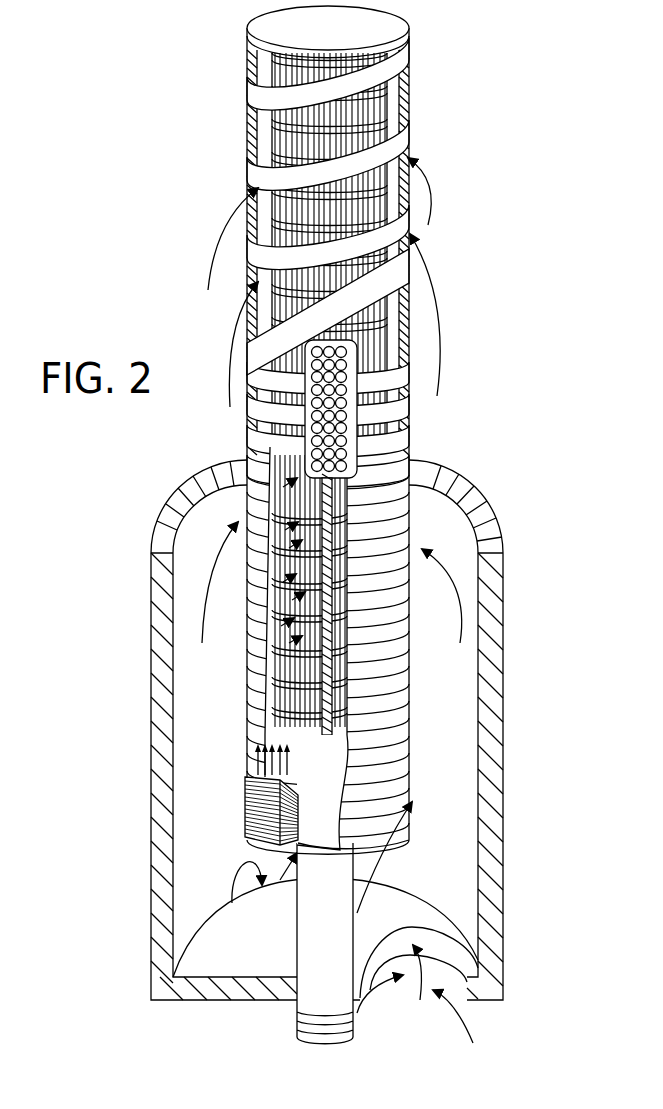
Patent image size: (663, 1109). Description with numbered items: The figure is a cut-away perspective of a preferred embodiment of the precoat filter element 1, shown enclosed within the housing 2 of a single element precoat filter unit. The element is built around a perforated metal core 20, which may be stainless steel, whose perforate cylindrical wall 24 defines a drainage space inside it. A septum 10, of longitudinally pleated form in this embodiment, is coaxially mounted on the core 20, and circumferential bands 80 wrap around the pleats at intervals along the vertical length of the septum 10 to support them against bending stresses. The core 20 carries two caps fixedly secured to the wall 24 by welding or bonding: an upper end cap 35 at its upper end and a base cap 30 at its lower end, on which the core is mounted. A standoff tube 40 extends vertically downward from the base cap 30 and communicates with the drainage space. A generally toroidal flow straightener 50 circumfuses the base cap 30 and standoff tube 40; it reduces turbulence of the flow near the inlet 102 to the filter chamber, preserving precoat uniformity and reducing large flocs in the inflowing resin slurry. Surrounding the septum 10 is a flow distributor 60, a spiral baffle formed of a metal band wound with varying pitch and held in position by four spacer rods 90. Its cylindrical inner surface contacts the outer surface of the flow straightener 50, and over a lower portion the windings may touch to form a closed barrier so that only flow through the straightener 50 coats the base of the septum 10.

The precoat filter element 1 is at (356, 532).
The housing 2 is at (505, 602).
The septum 10 is at (330, 429).
The perforated metal core 20 is at (347, 380).
The perforate cylindrical wall 24 is at (384, 417).
The base cap 30 is at (309, 777).
The upper end cap 35 is at (388, 27).
The standoff tube 40 is at (302, 1003).
The flow straightener 50 is at (262, 812).
The flow distributor 60 is at (255, 245).
The circumferential bands 80 is at (250, 118).
The spacer rods 90 is at (252, 132).
The inlet 102 is at (455, 1003).